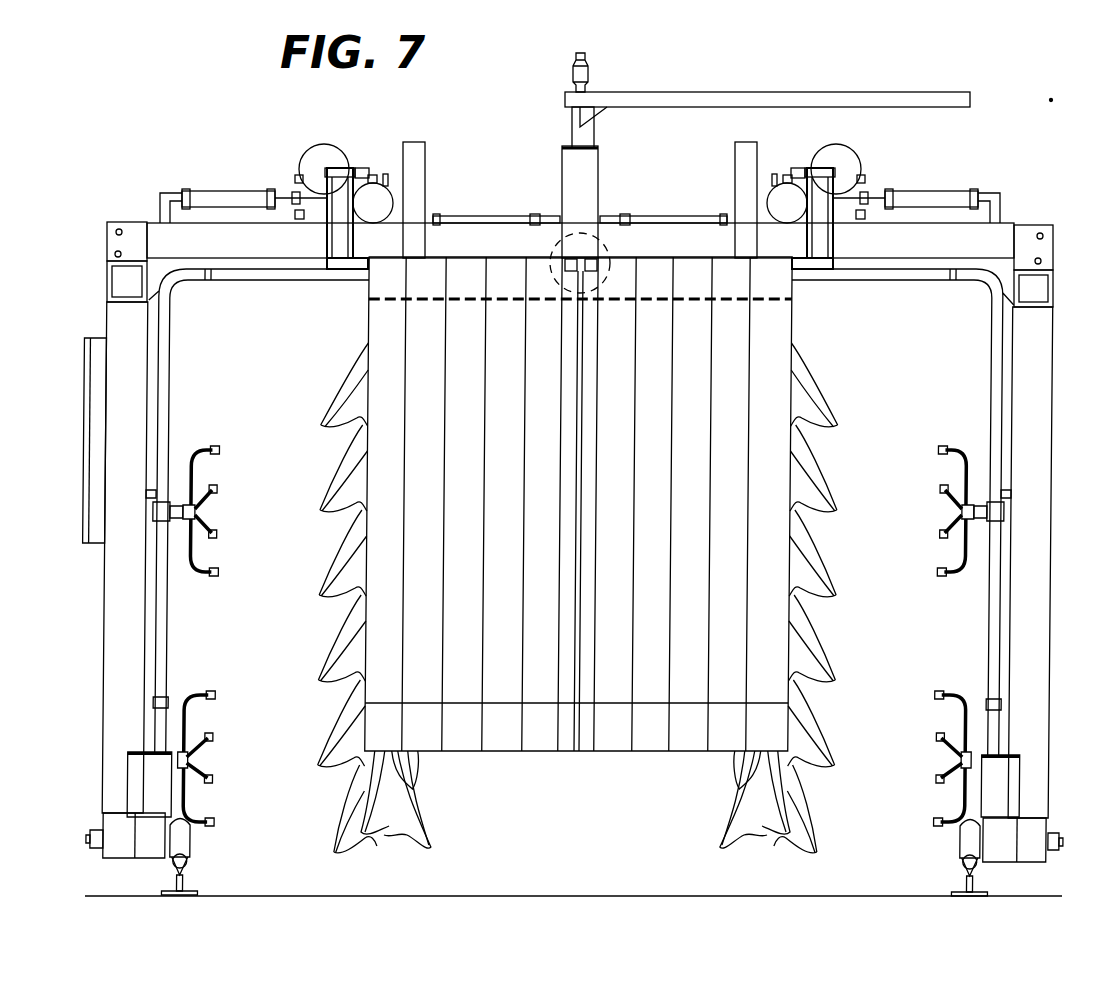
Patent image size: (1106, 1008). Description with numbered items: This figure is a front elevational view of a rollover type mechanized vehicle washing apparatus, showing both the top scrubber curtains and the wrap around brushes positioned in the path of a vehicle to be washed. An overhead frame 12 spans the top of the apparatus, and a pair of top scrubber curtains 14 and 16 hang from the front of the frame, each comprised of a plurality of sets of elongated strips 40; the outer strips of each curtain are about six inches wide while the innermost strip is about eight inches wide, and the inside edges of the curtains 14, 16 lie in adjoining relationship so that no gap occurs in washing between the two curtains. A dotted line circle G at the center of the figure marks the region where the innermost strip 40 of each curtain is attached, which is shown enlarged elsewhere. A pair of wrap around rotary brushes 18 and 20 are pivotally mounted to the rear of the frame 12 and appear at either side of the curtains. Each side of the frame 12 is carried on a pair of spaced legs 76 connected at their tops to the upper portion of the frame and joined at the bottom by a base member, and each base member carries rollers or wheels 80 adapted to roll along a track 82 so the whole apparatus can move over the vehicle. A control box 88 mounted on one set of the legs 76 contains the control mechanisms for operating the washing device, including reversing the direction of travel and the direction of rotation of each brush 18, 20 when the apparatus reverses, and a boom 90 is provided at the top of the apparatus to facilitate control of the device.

The overhead frame 12 is at (907, 259).
The top scrubber curtain 14 is at (775, 333).
The top scrubber curtain 16 is at (378, 311).
The wrap around rotary brush 18 is at (810, 406).
The wrap around rotary brush 20 is at (345, 395).
The elongated strip 40 is at (688, 753).
The leg 76 is at (107, 637).
The roller 80 is at (195, 838).
The track 82 is at (188, 881).
The control box 88 is at (83, 402).
The boom 90 is at (675, 92).
The dotted line circle G is at (597, 213).